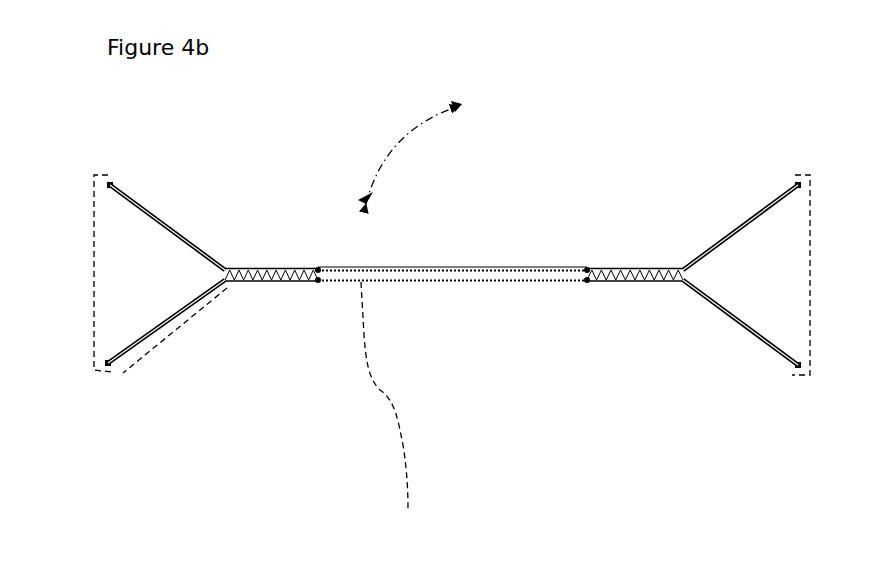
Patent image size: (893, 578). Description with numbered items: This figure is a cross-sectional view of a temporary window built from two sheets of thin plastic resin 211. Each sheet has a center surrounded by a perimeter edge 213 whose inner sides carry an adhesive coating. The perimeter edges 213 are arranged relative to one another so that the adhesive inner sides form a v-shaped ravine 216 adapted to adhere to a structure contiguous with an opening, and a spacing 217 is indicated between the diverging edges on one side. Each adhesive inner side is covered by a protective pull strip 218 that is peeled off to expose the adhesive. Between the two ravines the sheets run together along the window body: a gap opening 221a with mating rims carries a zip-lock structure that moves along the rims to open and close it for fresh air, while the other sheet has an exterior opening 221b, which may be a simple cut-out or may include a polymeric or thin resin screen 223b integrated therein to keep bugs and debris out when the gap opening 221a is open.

The perimeter edge 213 is at (152, 212).
The sheets of thin plastic resin 211 is at (342, 267).
The v-shaped ravine 216 is at (93, 274).
The arm spacing 217 is at (177, 335).
The protective pull strip 218 is at (180, 240).
The gap opening 221a is at (532, 268).
The exterior opening 221b is at (447, 283).
The screen 223b is at (395, 411).